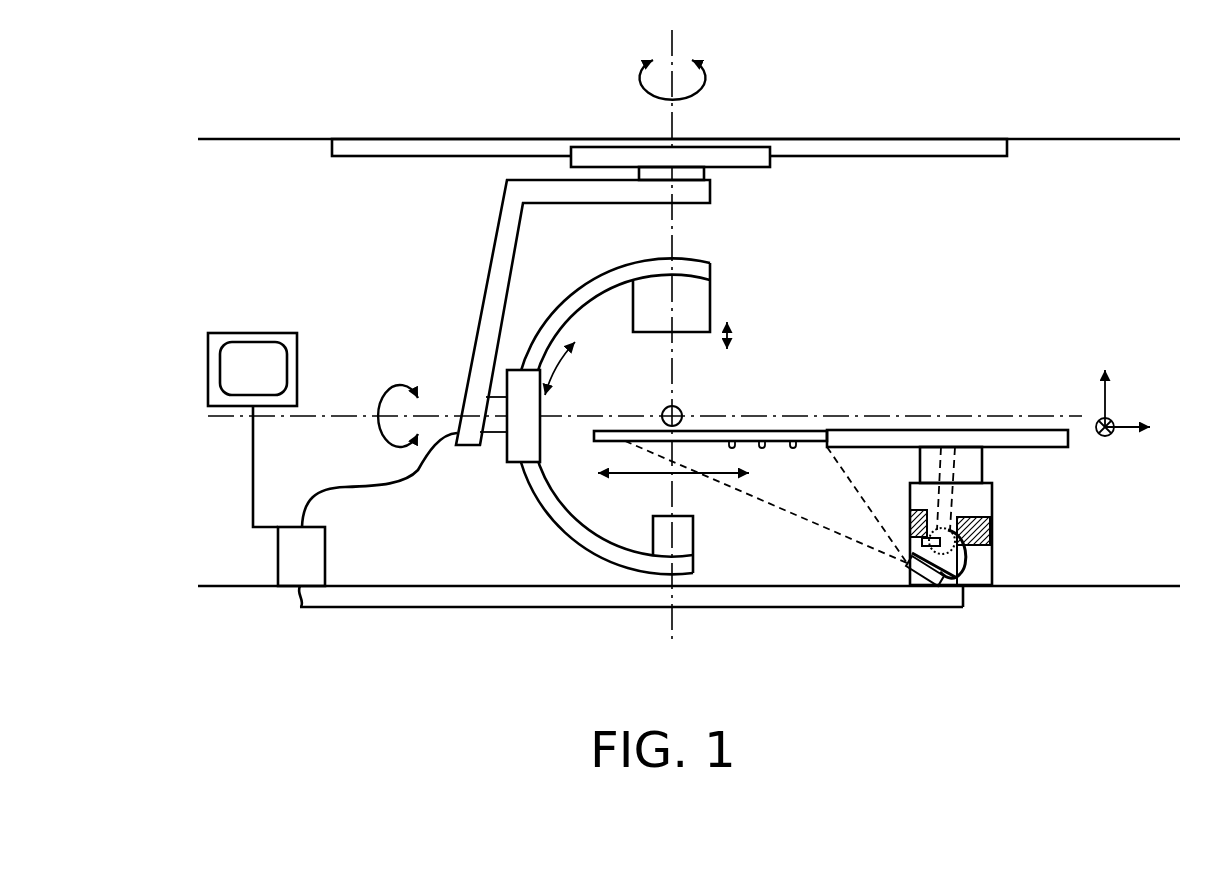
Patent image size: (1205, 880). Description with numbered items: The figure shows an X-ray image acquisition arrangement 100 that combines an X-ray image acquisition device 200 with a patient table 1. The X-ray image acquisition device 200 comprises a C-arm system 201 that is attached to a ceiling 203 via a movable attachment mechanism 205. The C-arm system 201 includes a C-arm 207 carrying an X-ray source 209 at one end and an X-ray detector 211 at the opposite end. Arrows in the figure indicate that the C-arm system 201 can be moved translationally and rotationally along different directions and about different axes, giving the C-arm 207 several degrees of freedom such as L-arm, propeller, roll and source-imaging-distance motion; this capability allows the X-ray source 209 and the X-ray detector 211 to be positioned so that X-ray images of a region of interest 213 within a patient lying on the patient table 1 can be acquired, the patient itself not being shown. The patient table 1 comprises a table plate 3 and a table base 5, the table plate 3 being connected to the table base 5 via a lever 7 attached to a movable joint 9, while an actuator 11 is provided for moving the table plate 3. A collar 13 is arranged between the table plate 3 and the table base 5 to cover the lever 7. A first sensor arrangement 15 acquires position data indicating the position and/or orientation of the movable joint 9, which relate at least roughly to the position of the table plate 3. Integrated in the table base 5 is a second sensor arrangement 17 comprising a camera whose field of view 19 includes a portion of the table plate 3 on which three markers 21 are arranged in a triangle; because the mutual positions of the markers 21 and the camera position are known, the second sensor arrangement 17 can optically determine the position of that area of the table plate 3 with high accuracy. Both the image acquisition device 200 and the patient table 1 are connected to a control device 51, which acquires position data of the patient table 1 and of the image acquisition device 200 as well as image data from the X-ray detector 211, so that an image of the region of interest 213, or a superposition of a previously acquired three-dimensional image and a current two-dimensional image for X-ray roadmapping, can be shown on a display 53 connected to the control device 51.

The patient table 1 is at (960, 411).
The table plate 3 is at (1058, 437).
The table base 5 is at (992, 562).
The lever 7 is at (956, 466).
The movable joint 9 is at (952, 548).
The actuator 11 is at (992, 530).
The collar 13 is at (920, 462).
The first sensor arrangement 15 is at (905, 525).
The second sensor arrangement 17 is at (930, 572).
The field of view 19 is at (820, 527).
The markers 21 is at (762, 447).
The control device 51 is at (275, 575).
The display 53 is at (208, 370).
The X-ray image acquisition arrangement 100 is at (933, 310).
The X-ray image acquisition device 200 is at (733, 254).
The C-arm system 201 is at (500, 494).
The ceiling 203 is at (1007, 148).
The movable attachment mechanism 205 is at (480, 303).
The C-arm 207 is at (547, 538).
The X-ray source 209 is at (712, 298).
The X-ray detector 211 is at (693, 530).
The region of interest 213 is at (664, 404).